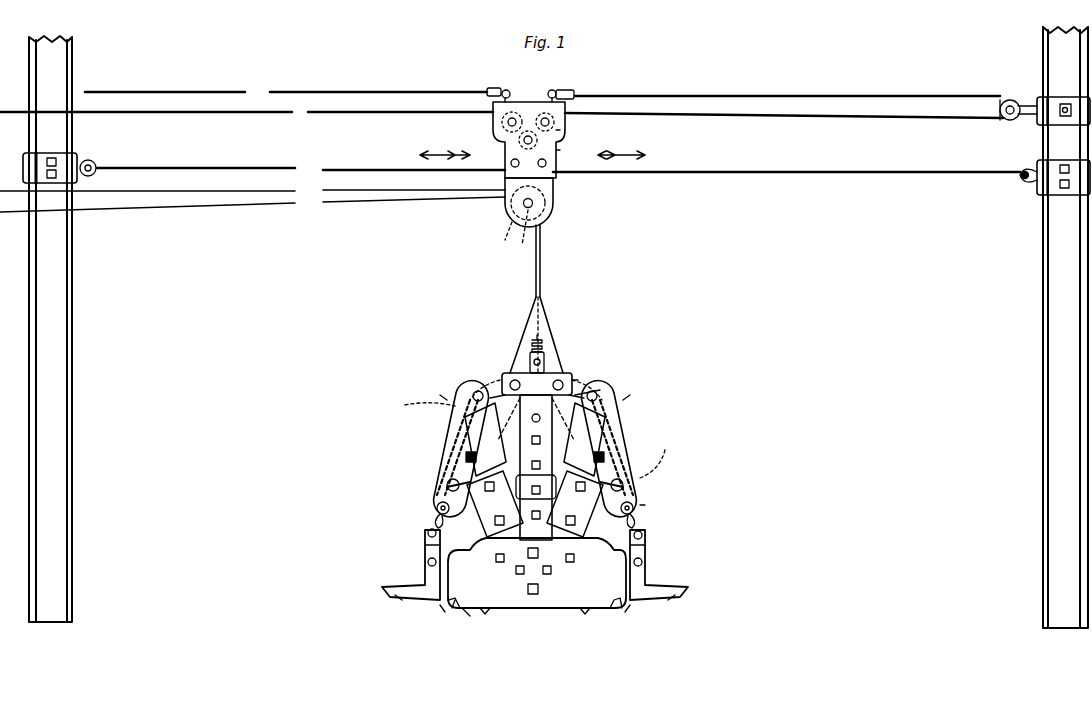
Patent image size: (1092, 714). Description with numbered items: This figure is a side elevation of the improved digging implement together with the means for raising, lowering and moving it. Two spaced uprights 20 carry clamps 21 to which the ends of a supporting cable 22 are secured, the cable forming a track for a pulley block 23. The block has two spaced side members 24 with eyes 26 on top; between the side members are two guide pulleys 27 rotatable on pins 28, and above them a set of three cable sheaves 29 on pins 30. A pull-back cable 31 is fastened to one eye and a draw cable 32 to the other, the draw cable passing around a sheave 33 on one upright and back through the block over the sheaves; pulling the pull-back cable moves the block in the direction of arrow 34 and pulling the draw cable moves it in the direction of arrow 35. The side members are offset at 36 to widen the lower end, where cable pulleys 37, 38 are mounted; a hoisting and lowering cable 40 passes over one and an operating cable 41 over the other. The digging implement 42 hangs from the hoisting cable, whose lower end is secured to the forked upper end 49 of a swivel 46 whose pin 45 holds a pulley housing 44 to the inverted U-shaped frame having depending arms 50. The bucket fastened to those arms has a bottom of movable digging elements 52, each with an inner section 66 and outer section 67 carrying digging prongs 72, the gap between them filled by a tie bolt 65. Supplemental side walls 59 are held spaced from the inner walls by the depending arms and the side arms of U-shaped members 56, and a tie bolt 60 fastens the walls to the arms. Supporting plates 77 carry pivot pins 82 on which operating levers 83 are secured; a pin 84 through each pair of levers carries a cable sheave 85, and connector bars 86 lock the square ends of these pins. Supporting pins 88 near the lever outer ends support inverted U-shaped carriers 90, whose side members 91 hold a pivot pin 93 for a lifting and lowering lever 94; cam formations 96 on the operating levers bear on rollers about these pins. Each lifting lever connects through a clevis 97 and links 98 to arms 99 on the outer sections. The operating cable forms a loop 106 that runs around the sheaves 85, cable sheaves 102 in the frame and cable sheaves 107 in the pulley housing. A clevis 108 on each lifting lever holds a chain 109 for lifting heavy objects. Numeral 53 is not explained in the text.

The uprights 20 is at (62, 315).
The clamps 21 is at (70, 160).
The supporting cable 22 is at (558, 161).
The pulley block 23 is at (566, 130).
The side members 24 is at (570, 152).
The eyes 26 is at (508, 92).
The guide pulleys 27 is at (500, 150).
The pins 28 is at (514, 168).
The cable sheaves 29 is at (478, 128).
The pins 30 is at (541, 115).
The pull-back cable 31 is at (297, 83).
The draw cable 32 is at (501, 110).
The sheave 33 is at (1010, 122).
The arrow 34 is at (445, 147).
The arrow 35 is at (545, 220).
The offset 36 is at (550, 200).
The cable pulley 37 is at (497, 235).
The cable pulley 38 is at (518, 236).
The hoisting and lowering cable 40 is at (342, 200).
The operating cable 41 is at (238, 206).
The digging implement 42 is at (525, 610).
The pulley housing 44 is at (556, 362).
The pin 45 is at (575, 381).
The swivel 46 is at (530, 365).
The forked upper end 49 is at (530, 354).
The depending arms 50 is at (522, 458).
The digging elements 52 is at (615, 610).
The foot 53 is at (455, 610).
The U-shaped members 56 is at (484, 612).
The supplemental side walls 59 is at (466, 618).
The tie bolt 60 is at (540, 556).
The tie bolt 65 is at (550, 595).
The inner section 66 is at (443, 612).
The outer section 67 is at (420, 600).
The digging prongs 72 is at (425, 572).
The supporting plates 77 is at (585, 505).
The pivot pins 82 is at (496, 523).
The operating levers 83 is at (608, 458).
The pin 84 is at (445, 487).
The cable sheave 85 is at (436, 506).
The connector bars 86 is at (432, 524).
The supporting pins 88 is at (440, 458).
The carrier 90 is at (452, 410).
The side members 91 is at (440, 470).
The pivot pin 93 is at (462, 400).
The lifting and lowering lever 94 is at (642, 508).
The cam formation 96 is at (448, 440).
The clevis 97 is at (425, 535).
The links 98 is at (425, 552).
The arms 99 is at (425, 560).
The cable sheaves 102 is at (585, 392).
The loop 106 is at (548, 323).
The cable sheaves 107 is at (572, 378).
The clevis 108 is at (465, 395).
The chain 109 is at (692, 462).